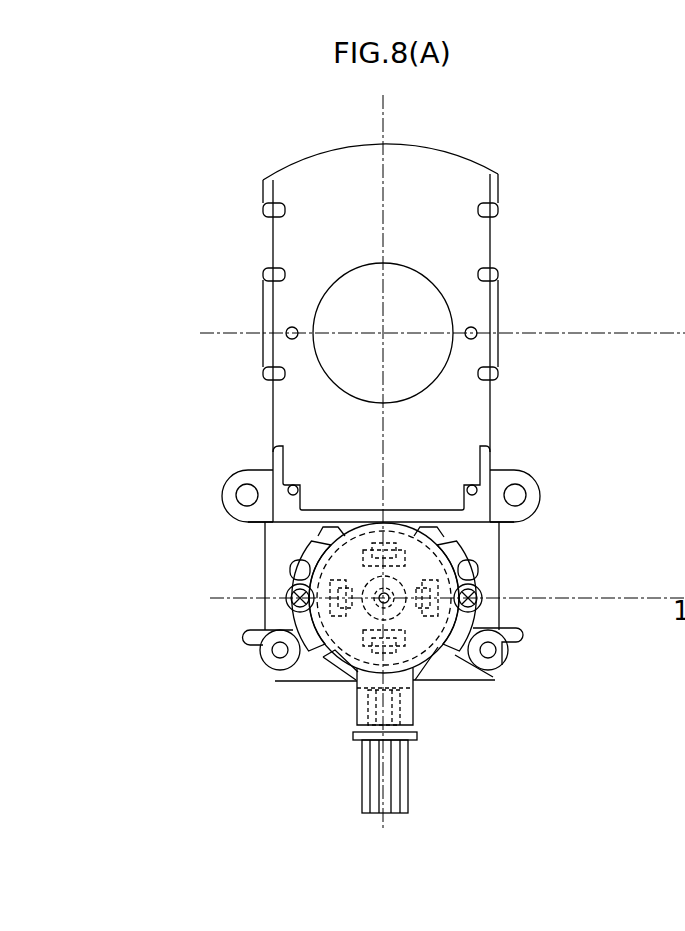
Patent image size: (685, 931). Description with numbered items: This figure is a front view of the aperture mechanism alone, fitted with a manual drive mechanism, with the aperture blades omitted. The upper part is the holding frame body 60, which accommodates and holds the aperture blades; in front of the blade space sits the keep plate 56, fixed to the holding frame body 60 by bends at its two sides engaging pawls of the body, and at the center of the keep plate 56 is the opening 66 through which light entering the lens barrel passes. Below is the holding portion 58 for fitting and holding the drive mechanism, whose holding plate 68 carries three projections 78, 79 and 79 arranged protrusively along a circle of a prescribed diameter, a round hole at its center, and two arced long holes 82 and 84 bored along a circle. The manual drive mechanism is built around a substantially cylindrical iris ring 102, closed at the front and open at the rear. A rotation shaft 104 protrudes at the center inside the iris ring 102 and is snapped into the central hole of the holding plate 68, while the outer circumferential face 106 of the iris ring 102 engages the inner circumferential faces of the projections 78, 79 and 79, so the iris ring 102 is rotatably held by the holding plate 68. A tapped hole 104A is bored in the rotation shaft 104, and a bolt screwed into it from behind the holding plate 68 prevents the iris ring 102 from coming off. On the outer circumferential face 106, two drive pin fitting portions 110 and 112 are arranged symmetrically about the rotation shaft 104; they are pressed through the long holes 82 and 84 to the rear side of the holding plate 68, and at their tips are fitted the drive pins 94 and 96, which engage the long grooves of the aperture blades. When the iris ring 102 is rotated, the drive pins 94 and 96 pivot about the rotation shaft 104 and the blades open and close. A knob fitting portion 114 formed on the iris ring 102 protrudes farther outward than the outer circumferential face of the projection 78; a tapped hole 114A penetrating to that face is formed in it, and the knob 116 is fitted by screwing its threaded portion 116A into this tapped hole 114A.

The keep plate 56 is at (417, 203).
The opening 66 is at (445, 300).
The holding frame body 60 is at (532, 402).
The holding portion 58 is at (128, 582).
The projection 78 is at (410, 668).
The projection 79 is at (322, 530).
The arced long hole 82 is at (472, 570).
The arced long hole 84 is at (292, 565).
The holding plate 68 is at (493, 585).
The drive pin 94 is at (478, 606).
The drive pin 96 is at (296, 603).
The iris ring 102 is at (310, 577).
The rotation shaft 104 is at (382, 600).
The tapped hole 104A is at (286, 645).
The outer circumferential face 106 is at (492, 670).
The drive pin fitting portion 110 is at (482, 599).
The drive pin fitting portion 112 is at (264, 600).
The knob fitting portion 114 is at (343, 700).
The tapped hole 114A is at (378, 713).
The knob 116 is at (390, 826).
The threaded portion 116A is at (417, 740).